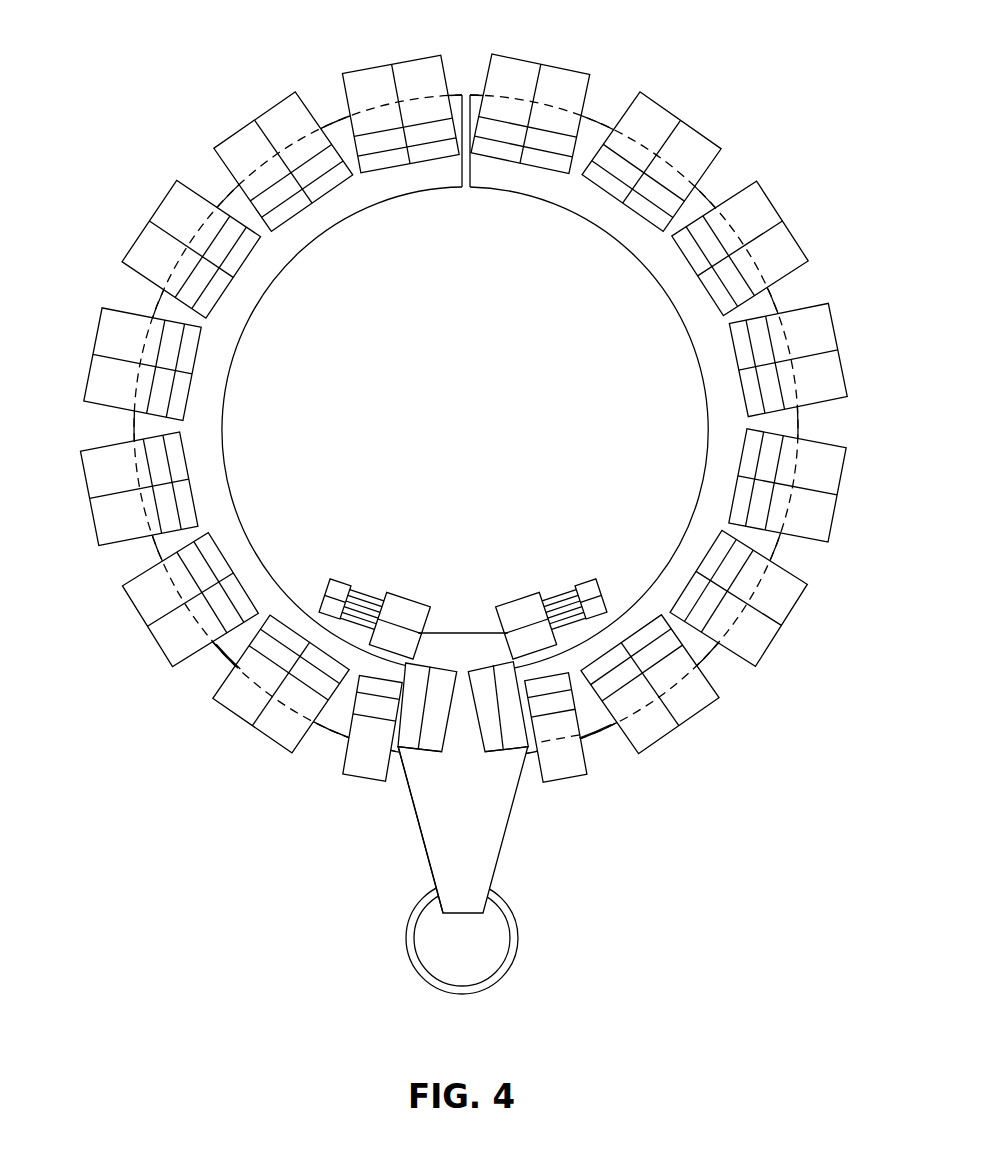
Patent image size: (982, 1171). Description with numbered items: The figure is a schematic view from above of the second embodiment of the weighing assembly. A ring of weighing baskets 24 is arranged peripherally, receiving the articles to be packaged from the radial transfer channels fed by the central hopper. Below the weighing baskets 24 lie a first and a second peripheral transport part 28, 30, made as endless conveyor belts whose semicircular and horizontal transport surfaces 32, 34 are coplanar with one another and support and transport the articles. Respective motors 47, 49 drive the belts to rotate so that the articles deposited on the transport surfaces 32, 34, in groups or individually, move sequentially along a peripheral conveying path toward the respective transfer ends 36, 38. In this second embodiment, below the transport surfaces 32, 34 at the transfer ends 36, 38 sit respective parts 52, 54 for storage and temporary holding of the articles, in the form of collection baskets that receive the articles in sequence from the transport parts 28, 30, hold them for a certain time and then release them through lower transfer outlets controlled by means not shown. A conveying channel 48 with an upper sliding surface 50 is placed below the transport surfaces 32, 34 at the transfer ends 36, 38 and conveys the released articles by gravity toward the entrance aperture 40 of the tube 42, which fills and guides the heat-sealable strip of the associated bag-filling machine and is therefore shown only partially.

The weighing baskets 24 is at (243, 140).
The first peripheral transport part 28 is at (610, 750).
The second peripheral transport part 30 is at (200, 677).
The semicircular horizontal transport surface 32 is at (668, 578).
The semicircular horizontal transport surface 34 is at (160, 547).
The transfer end 36 is at (508, 676).
The transfer end 38 is at (417, 679).
The entrance aperture 40 is at (484, 950).
The filling and guiding tube 42 is at (422, 970).
The motor 47 is at (523, 608).
The conveying channel 48 is at (415, 851).
The motor 49 is at (397, 610).
The upper sliding surface 50 is at (480, 838).
The collection basket 52 is at (523, 764).
The collection basket 54 is at (421, 762).